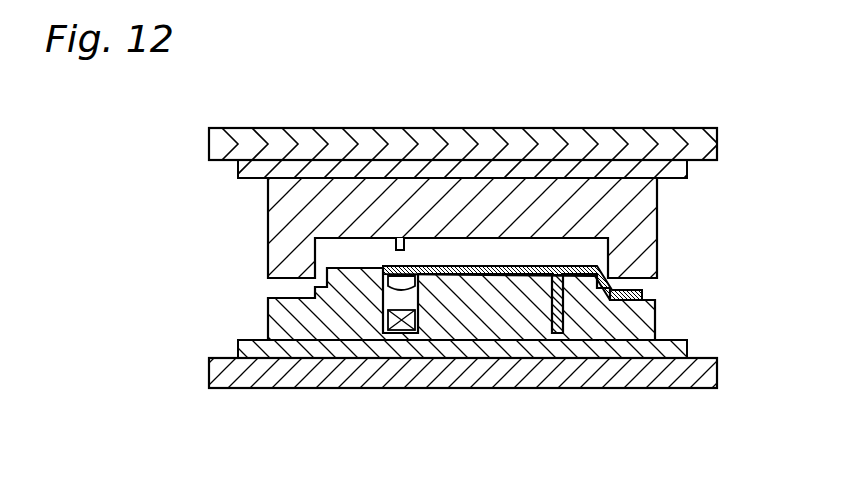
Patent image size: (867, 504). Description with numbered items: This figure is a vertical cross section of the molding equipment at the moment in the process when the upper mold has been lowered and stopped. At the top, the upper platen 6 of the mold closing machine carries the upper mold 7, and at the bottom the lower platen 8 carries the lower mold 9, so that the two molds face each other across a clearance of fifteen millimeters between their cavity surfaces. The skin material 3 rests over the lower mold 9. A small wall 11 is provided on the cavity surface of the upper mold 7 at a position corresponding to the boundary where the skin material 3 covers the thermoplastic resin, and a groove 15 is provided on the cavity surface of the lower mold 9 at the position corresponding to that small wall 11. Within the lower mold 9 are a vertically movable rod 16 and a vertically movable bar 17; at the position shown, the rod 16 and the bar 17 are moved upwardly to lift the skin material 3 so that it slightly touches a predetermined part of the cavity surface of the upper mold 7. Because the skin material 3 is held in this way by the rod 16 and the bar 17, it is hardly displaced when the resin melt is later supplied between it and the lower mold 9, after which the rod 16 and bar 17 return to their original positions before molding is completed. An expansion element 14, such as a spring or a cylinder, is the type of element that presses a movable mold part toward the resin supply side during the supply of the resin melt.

The skin material 3 is at (428, 265).
The upper platen 6 is at (220, 145).
The upper mold 7 is at (283, 217).
The lower platen 8 is at (223, 373).
The lower mold 9 is at (275, 315).
The small wall 11 is at (400, 242).
The expansion element 14 is at (417, 322).
The groove 15 is at (421, 280).
The vertically movable rod 16 is at (565, 293).
The vertically movable bar 17 is at (385, 297).